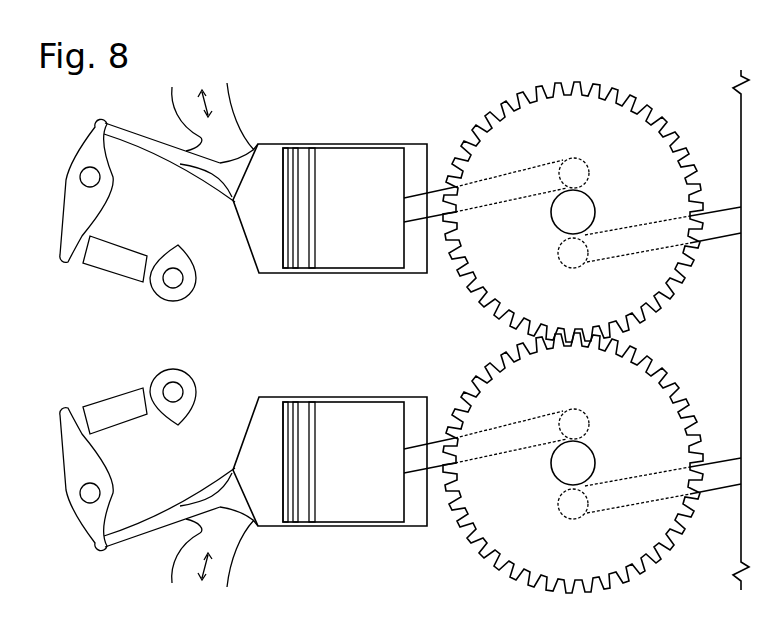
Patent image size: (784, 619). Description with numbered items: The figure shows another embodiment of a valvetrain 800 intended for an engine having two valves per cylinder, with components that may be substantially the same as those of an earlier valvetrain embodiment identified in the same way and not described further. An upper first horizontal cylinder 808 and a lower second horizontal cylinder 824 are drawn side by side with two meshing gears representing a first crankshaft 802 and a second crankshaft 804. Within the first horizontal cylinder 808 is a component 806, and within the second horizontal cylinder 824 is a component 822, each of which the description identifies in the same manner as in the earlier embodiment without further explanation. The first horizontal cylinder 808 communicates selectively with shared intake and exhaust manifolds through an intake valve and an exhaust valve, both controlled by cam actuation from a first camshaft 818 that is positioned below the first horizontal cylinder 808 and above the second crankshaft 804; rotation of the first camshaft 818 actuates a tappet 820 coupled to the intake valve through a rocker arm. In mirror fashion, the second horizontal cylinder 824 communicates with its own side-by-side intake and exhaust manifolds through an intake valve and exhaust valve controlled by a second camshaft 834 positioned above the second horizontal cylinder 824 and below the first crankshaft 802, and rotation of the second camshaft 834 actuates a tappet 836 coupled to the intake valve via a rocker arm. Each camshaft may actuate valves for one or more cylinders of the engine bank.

The valvetrain 800 is at (641, 74).
The first crankshaft 802 is at (549, 149).
The second crankshaft 804 is at (549, 399).
The first piston 806 is at (374, 221).
The first horizontal cylinder 808 is at (278, 144).
The first camshaft 818 is at (197, 283).
The tappet 820 is at (107, 278).
The second piston 822 is at (374, 468).
The second horizontal cylinder 824 is at (278, 397).
The second camshaft 834 is at (193, 381).
The tappet 836 is at (108, 396).